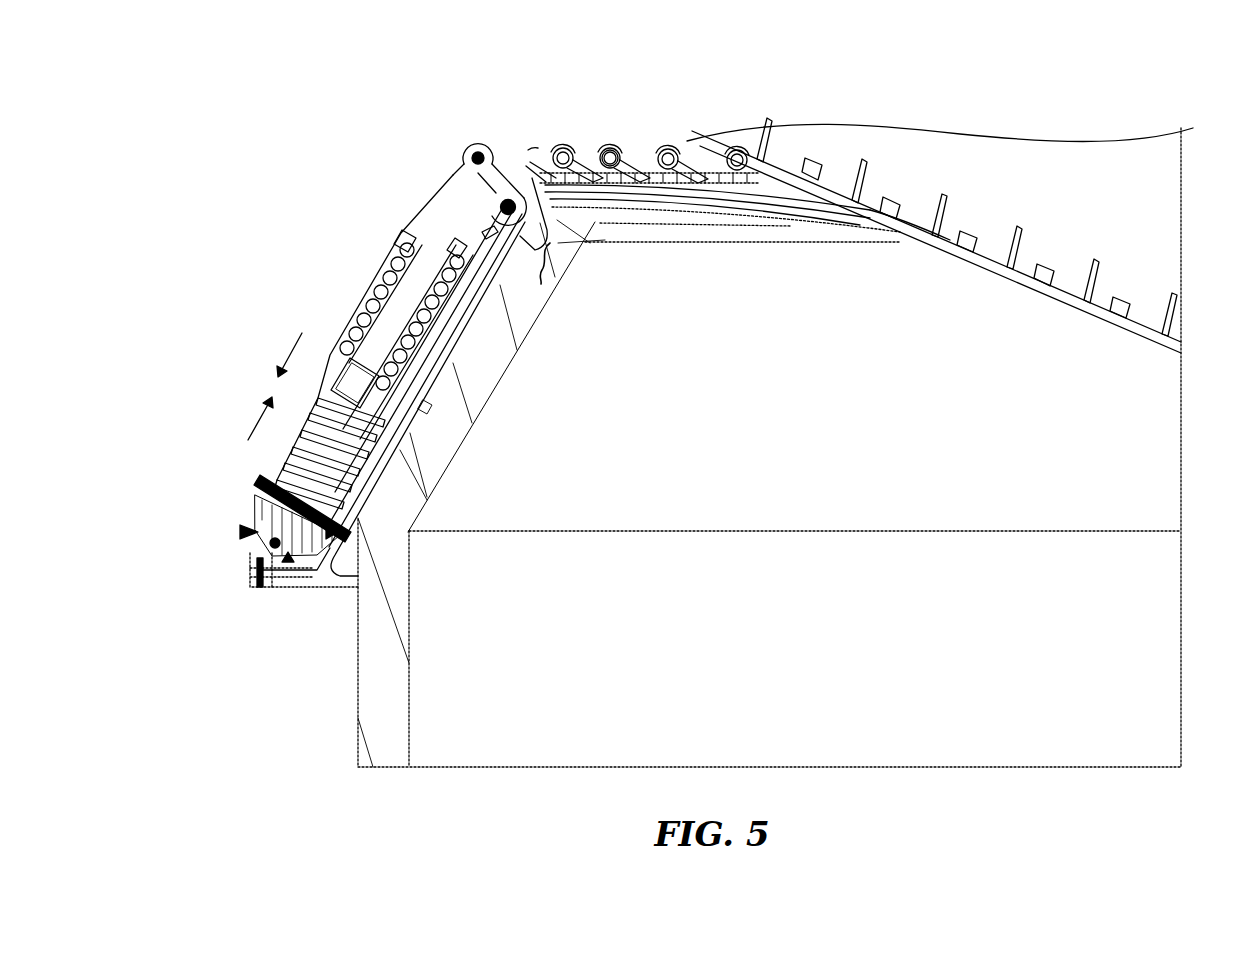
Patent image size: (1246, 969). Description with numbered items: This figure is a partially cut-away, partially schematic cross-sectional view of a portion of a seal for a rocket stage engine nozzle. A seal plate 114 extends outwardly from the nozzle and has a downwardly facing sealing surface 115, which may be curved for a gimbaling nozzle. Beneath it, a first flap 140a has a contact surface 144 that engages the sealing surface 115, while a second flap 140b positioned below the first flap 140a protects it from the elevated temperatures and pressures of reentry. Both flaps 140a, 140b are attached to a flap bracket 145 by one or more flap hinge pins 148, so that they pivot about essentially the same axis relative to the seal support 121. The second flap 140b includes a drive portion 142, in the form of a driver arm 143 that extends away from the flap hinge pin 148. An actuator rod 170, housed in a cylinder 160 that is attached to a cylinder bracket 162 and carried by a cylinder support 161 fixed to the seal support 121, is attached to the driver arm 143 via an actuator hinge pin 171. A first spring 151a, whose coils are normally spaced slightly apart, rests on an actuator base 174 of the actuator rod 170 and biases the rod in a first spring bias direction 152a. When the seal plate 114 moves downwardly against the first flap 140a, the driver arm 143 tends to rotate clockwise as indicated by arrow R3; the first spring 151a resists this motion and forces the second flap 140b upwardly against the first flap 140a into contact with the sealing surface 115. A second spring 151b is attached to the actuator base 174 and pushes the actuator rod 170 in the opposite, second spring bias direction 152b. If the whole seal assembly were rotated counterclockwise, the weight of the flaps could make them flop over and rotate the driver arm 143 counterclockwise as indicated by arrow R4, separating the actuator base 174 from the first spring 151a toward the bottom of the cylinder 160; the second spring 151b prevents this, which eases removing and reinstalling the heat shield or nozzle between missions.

The seal plate 114 is at (1075, 312).
The sealing surface 115 is at (1122, 348).
The seal support 121 is at (358, 712).
The first flap 140a is at (710, 203).
The second flap 140b is at (625, 205).
The drive portion 142 is at (548, 128).
The driver arm 143 is at (572, 158).
The contact surface 144 is at (805, 208).
The flap bracket 145 is at (497, 222).
The flap hinge pin 148 is at (503, 206).
The first spring 151a is at (377, 290).
The second spring 151b is at (350, 440).
The first spring bias direction 152a is at (297, 337).
The second spring bias direction 152b is at (267, 410).
The cylinder 160 is at (433, 347).
The cylinder support 161 is at (288, 590).
The cylinder bracket 162 is at (273, 588).
The actuator rod 170 is at (413, 275).
The actuator hinge pin 171 is at (483, 155).
The actuator base 174 is at (334, 360).
The clockwise rotation arrow R3 is at (482, 132).
The counterclockwise rotation arrow R4 is at (463, 109).